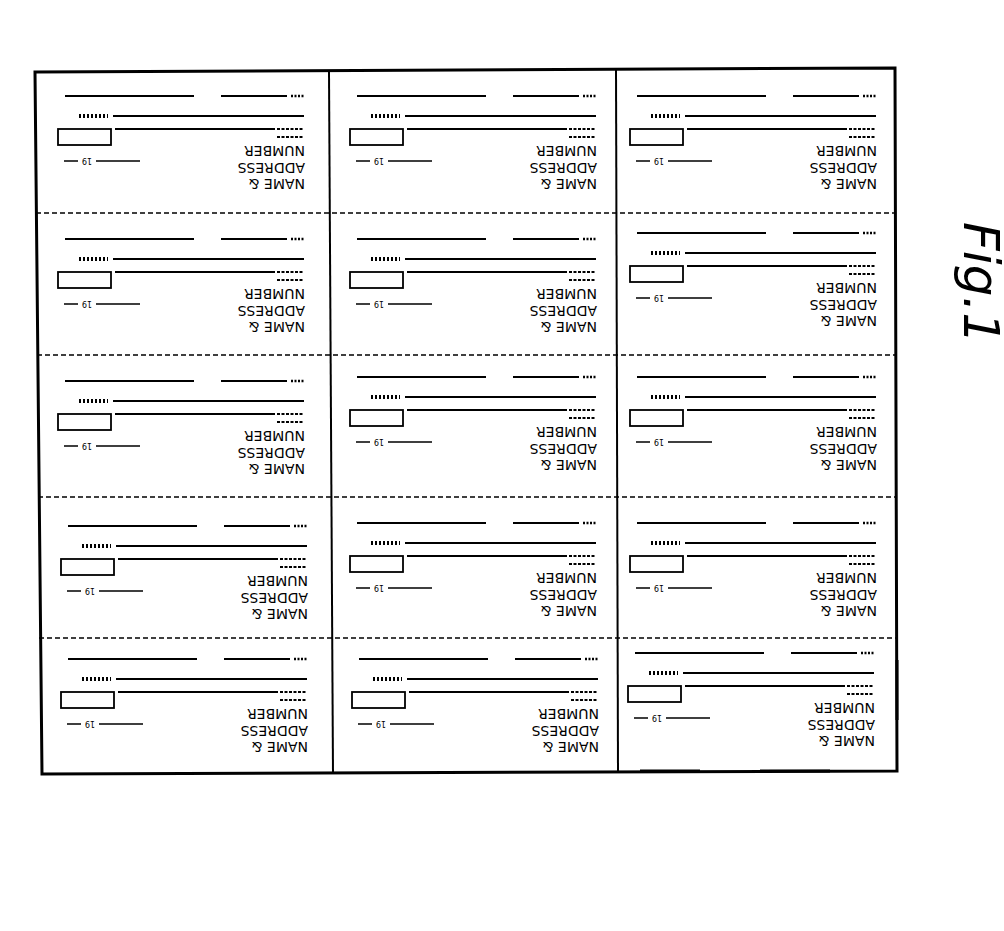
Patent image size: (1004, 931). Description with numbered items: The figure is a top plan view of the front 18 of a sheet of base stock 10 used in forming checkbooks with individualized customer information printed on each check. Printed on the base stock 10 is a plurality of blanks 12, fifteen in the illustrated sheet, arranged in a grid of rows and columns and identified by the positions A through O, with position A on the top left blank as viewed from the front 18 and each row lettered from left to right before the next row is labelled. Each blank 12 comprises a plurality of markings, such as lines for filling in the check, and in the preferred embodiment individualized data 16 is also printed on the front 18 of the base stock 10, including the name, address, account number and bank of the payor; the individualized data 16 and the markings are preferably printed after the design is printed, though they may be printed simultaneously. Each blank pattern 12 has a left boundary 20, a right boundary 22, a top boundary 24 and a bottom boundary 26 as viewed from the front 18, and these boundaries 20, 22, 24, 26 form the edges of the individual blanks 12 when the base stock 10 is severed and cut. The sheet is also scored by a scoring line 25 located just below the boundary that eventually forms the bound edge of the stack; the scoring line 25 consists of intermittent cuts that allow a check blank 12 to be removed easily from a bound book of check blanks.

The sheet of base stock 10 is at (512, 772).
The blank 12 is at (35, 160).
The individualized data 16 is at (878, 724).
The front 18 is at (790, 750).
The left boundary 20 is at (897, 692).
The right boundary 22 is at (618, 743).
The top boundary 24 is at (668, 770).
The scoring line 25 is at (752, 494).
The bottom boundary 26 is at (737, 635).